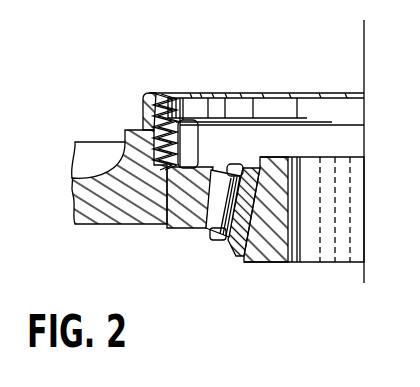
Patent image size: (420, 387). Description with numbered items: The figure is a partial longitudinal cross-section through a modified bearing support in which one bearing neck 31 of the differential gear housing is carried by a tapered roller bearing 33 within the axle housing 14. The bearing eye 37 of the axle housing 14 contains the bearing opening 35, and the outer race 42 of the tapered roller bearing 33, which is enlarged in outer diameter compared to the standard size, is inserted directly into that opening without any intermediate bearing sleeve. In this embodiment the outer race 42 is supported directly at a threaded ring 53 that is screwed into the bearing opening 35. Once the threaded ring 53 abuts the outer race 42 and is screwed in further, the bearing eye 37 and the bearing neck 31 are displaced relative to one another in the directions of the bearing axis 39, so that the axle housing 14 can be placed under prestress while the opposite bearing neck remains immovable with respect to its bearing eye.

The axle housing 14 is at (85, 124).
The bearing neck 31 is at (282, 220).
The tapered roller bearing 33 is at (205, 253).
The bearing opening 35 is at (153, 140).
The bearing eye 37 is at (150, 112).
The bearing axis 39 is at (364, 50).
The outer race 42 is at (178, 230).
The threaded ring 53 is at (181, 134).